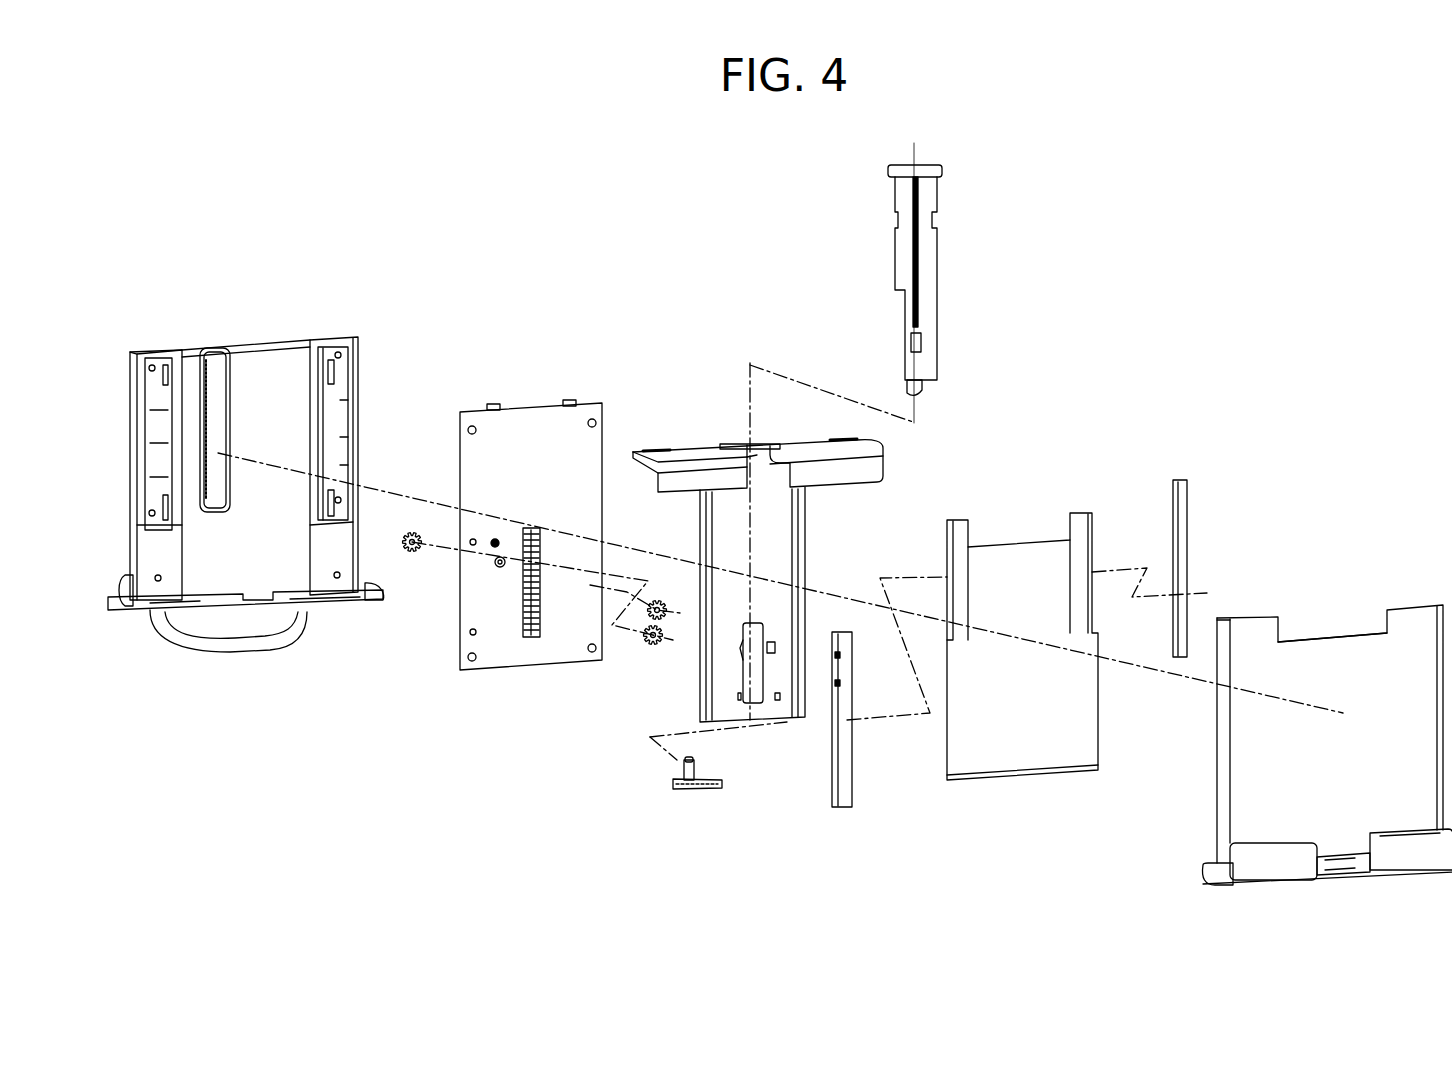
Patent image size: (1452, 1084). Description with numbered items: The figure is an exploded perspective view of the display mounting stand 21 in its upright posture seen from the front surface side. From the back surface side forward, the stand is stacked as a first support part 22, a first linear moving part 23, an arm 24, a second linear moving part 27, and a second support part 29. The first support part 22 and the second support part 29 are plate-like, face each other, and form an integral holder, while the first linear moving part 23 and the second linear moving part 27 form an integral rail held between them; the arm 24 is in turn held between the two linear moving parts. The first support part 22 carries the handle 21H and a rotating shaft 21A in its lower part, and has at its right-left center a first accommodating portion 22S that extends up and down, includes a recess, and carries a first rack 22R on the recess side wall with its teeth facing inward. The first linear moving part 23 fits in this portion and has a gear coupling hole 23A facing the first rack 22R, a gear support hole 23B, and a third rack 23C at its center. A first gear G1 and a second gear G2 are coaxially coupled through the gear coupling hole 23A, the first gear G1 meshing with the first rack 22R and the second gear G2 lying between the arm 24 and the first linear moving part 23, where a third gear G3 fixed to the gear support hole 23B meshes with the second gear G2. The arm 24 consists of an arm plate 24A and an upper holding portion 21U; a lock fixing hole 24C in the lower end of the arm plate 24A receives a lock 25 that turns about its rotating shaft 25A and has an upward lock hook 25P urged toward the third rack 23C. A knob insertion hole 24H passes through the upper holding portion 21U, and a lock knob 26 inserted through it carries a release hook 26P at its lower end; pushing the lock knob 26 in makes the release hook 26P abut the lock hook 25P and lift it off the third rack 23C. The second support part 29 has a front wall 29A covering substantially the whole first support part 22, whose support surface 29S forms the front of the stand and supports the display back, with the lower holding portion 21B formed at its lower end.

The display mounting stand 21 is at (1256, 294).
The rotating shaft 21A is at (108, 600).
The lower holding portion 21B is at (1410, 855).
The handle 21H is at (248, 650).
The upper holding portion 21U is at (668, 450).
The first support part 22 is at (240, 510).
The first rack 22R is at (217, 350).
The first accommodating portion 22S is at (272, 357).
The first linear moving part 23 is at (493, 550).
The gear coupling hole 23A is at (500, 567).
The gear support hole 23B is at (495, 540).
The third rack 23C is at (532, 637).
The arm 24 is at (739, 598).
The arm plate 24A is at (806, 530).
The lock fixing hole 24C is at (750, 702).
The knob insertion hole 24H is at (770, 445).
The lock 25 is at (699, 813).
The rotating shaft 25A is at (676, 785).
The lock hook 25P is at (697, 762).
The lock knob 26 is at (929, 280).
The release hook 26P is at (905, 385).
The second linear moving part 27 is at (1014, 645).
The second support part 29 is at (1296, 766).
The front wall 29A is at (1243, 803).
The support surface 29S is at (1337, 653).
The first gear G1 is at (412, 553).
The second gear G2 is at (653, 646).
The third gear G3 is at (657, 600).